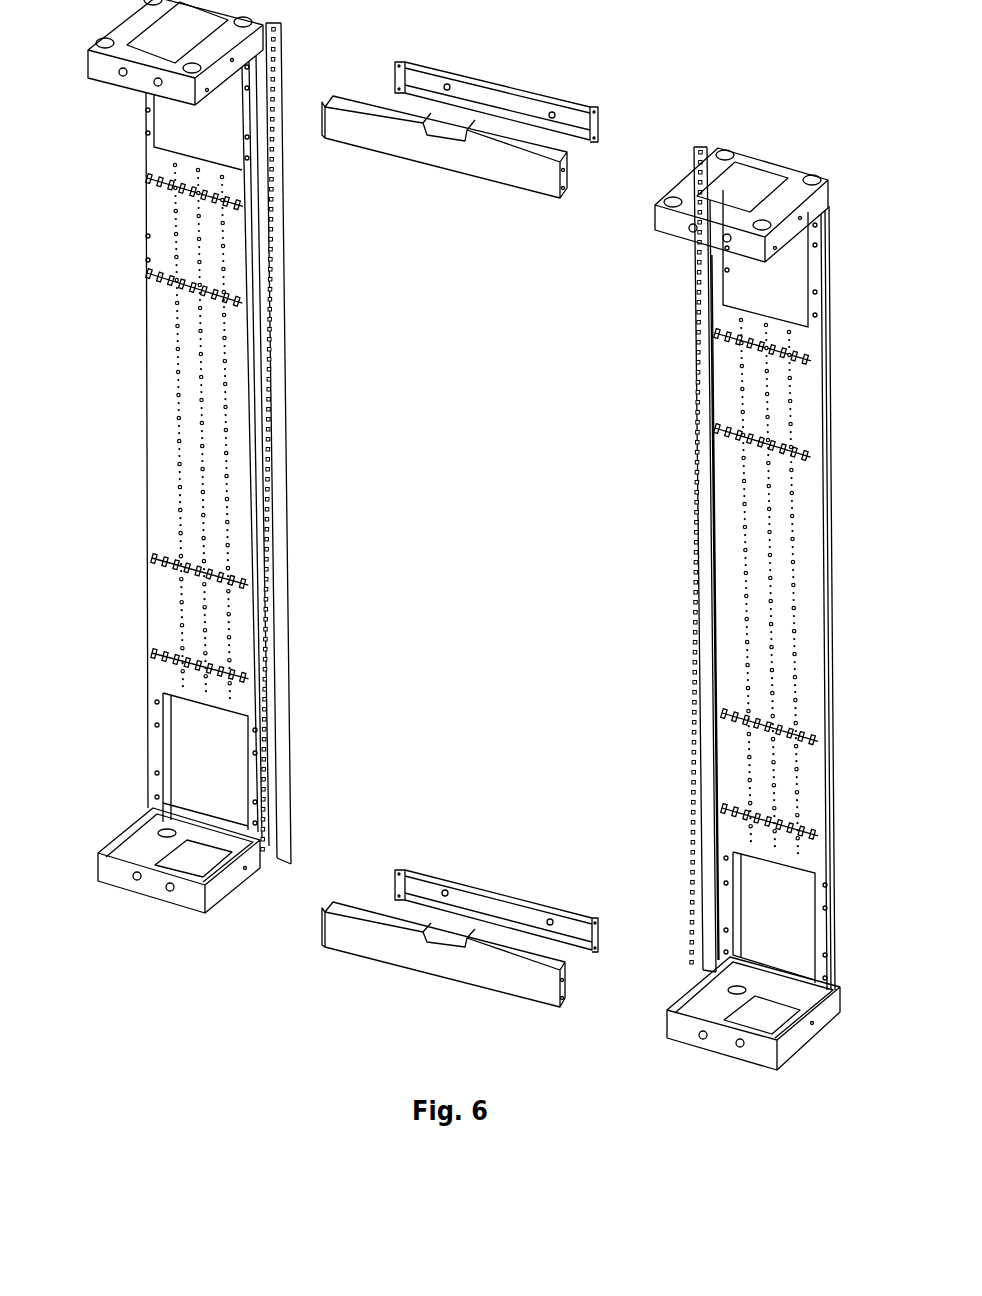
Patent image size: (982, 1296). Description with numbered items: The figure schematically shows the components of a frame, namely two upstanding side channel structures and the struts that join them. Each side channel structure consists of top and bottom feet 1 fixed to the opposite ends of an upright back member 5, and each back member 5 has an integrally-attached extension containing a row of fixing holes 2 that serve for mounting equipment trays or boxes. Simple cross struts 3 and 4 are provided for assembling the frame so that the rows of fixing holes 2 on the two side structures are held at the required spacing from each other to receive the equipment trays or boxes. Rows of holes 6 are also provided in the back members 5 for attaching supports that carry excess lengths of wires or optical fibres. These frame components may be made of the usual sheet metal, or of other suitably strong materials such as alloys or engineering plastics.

The top and bottom feet 1 is at (88, 63).
The fixing holes 2 is at (287, 475).
The cross strut 3 is at (410, 163).
The cross strut 4 is at (508, 90).
The upright back member 5 is at (157, 388).
The rows of holes 6 is at (223, 480).